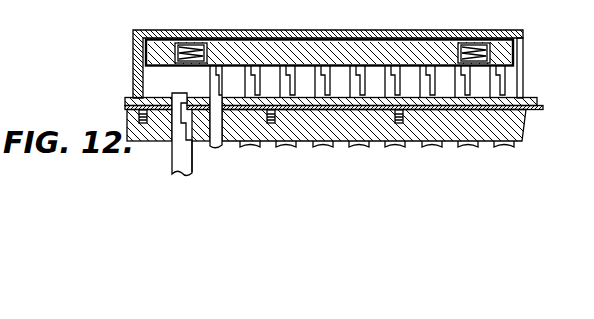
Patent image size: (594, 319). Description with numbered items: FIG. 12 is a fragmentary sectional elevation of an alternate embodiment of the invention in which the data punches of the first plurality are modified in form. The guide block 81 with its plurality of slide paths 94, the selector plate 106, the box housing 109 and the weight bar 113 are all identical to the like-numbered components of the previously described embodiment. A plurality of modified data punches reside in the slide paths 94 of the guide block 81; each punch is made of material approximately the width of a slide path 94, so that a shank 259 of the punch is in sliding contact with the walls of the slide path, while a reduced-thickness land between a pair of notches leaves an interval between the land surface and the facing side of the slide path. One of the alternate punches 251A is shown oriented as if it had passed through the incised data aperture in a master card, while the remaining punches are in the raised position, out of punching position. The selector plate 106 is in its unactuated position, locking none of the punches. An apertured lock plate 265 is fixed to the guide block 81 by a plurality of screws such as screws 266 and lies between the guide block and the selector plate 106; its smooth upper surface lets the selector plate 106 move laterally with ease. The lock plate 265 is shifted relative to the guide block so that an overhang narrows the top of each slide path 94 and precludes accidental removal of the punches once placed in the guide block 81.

The box housing 109 is at (388, 30).
The weight bar 113 is at (294, 56).
The selector plate 106 is at (537, 97).
The lock plate 265 is at (541, 112).
The screws 266 is at (392, 112).
The guide block 81 is at (143, 144).
The alternate punch 251A is at (172, 162).
The slide paths 94 is at (196, 146).
The shank 259 is at (192, 163).